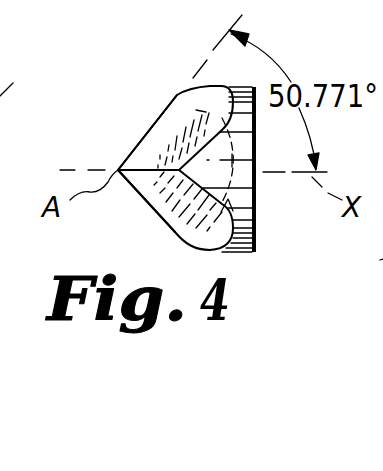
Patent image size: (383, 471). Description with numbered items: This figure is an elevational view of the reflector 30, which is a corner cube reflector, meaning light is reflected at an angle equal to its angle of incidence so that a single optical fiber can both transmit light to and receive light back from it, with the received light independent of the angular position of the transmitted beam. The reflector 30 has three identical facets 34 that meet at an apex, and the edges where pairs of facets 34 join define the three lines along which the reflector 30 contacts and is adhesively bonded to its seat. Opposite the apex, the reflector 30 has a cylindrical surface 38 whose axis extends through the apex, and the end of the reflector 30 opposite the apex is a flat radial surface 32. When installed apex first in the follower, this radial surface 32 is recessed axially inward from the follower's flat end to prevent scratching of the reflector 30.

The reflector 30 is at (167, 103).
The flat radial surface 32 is at (256, 182).
The facets 34 is at (150, 128).
The cylindrical surface 38 is at (238, 253).